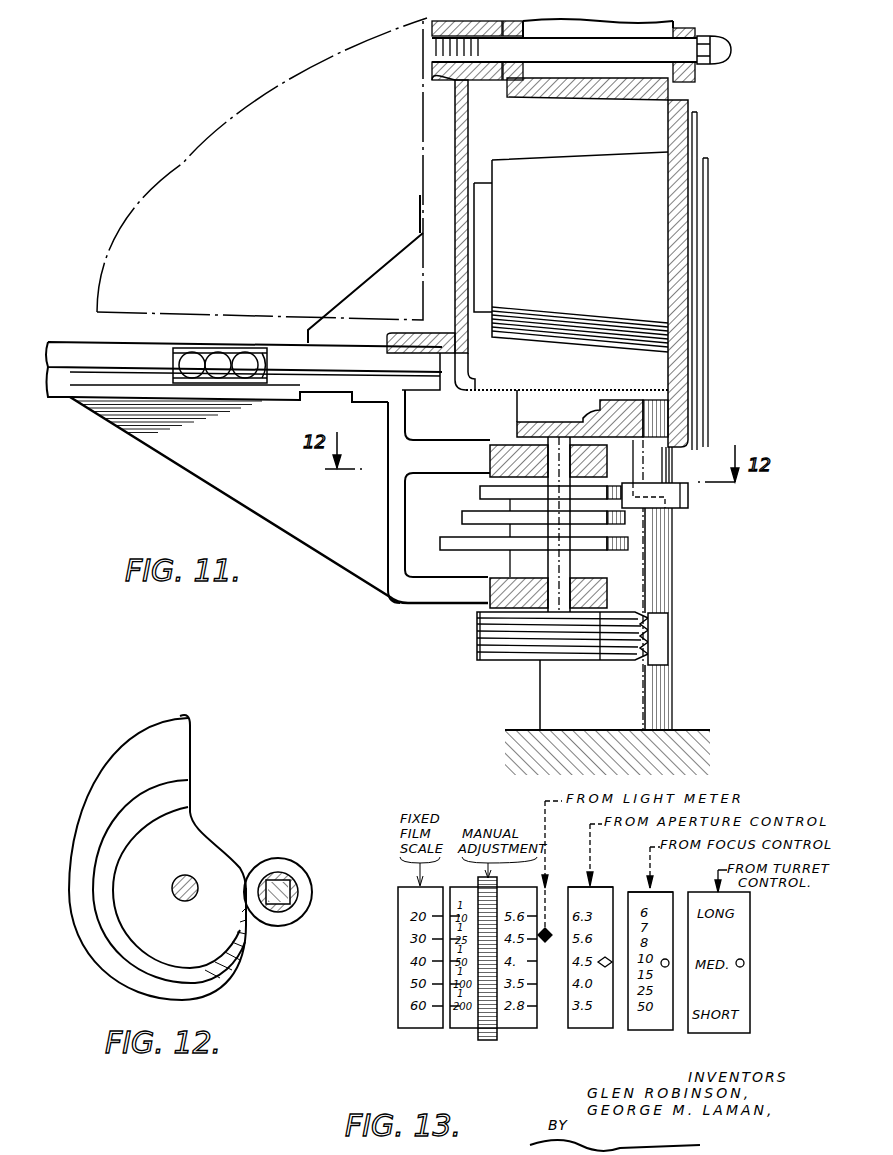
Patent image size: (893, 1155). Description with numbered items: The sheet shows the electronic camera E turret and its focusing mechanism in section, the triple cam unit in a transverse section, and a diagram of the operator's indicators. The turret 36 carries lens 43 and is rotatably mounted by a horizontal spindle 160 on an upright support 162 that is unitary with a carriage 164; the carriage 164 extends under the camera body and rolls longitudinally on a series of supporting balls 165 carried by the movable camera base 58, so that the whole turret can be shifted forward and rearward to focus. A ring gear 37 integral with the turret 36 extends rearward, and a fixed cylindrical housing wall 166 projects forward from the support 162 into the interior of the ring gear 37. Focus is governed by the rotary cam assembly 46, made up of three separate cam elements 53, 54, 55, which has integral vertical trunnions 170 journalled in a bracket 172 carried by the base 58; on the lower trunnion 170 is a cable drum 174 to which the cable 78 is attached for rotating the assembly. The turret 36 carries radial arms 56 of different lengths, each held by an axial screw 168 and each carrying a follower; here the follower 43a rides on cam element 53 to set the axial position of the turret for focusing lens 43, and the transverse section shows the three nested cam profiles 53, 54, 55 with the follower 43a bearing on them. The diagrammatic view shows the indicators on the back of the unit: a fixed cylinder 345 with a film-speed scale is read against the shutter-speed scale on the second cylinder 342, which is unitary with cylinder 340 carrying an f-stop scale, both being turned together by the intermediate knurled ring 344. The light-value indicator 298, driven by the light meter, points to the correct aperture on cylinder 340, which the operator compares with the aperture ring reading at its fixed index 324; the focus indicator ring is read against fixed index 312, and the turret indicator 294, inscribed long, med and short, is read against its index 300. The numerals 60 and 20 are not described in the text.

In FIG. 11, the electronic camera E is at (236, 114).
In FIG. 11, the horizontal spindle 160 is at (710, 48).
In FIG. 11, the upright support 162 is at (470, 136).
In FIG. 11, the lens 43 is at (615, 166).
In FIG. 11, the turret 36 is at (698, 412).
In FIG. 11, the ring gear 37 is at (582, 425).
In FIG. 11, the cylindrical housing wall 166 is at (520, 400).
In FIG. 11, the movable camera base 58 is at (108, 385).
In FIG. 11, the carriage 164 is at (258, 350).
In FIG. 11, the supporting balls 165 is at (218, 352).
In FIG. 11, the bracket 172 is at (388, 520).
In FIG. 11, the vertical trunnions 170 is at (556, 458).
In FIG. 12, the vertical trunnions 170 is at (190, 877).
In FIG. 11, the cam element 53 is at (480, 492).
In FIG. 12, the cam element 53 is at (122, 852).
In FIG. 11, the cam element 54 is at (462, 517).
In FIG. 12, the cam element 54 is at (125, 818).
In FIG. 11, the cam element 55 is at (440, 543).
In FIG. 12, the cam element 55 is at (118, 768).
In FIG. 11, the rotary cam assembly 46 is at (470, 555).
In FIG. 12, the rotary cam assembly 46 is at (198, 812).
In FIG. 11, the cable 78 is at (477, 640).
In FIG. 11, the cable drum 174 is at (497, 660).
In FIG. 11, the radial arm 56 is at (668, 460).
In FIG. 12, the radial arm 56 is at (290, 878).
In FIG. 11, the axial screw 168 is at (690, 497).
In FIG. 12, the axial screw 168 is at (290, 903).
In FIG. 11, the cam follower 43a is at (688, 510).
In FIG. 12, the cam follower 43a is at (286, 918).
In FIG. 11, the shaft lower portion 60 is at (645, 678).
In FIG. 11, the base 20 is at (690, 735).
In FIG. 13, the fixed cylinder 345 is at (398, 1018).
In FIG. 13, the second cylinder 342 is at (460, 1028).
In FIG. 13, the knurled ring 344 is at (488, 1040).
In FIG. 13, the cylinder 340 is at (522, 1020).
In FIG. 13, the light-value indicator 298 is at (548, 930).
In FIG. 13, the fixed index 324 is at (604, 968).
In FIG. 13, the fixed index 312 is at (662, 968).
In FIG. 13, the turret indicator 294 is at (750, 930).
In FIG. 13, the index 300 is at (744, 963).